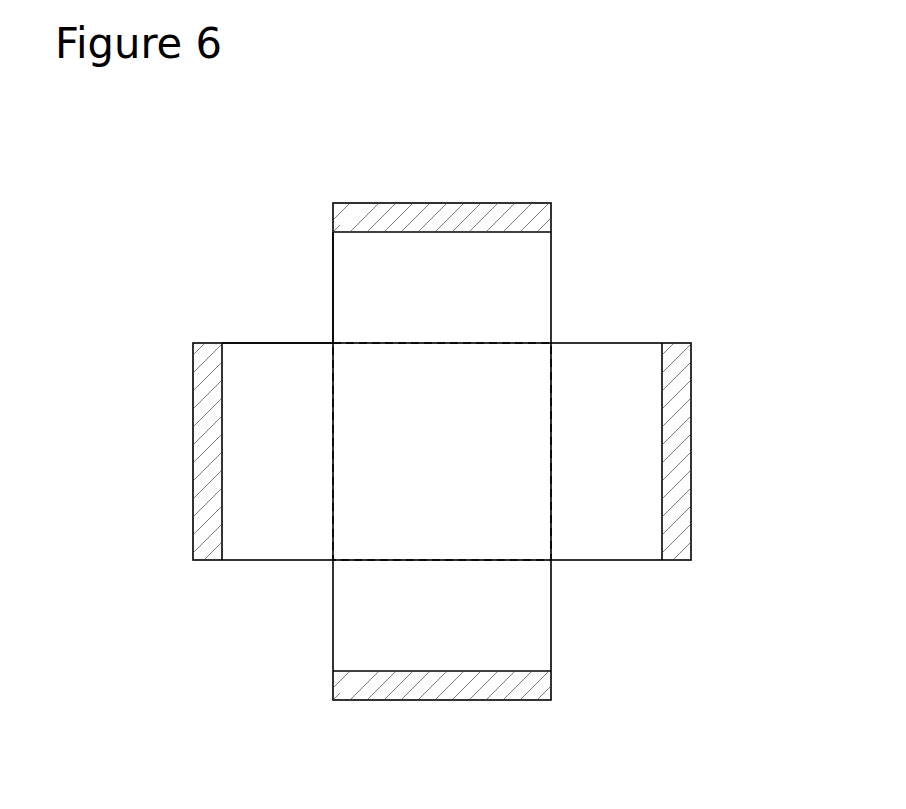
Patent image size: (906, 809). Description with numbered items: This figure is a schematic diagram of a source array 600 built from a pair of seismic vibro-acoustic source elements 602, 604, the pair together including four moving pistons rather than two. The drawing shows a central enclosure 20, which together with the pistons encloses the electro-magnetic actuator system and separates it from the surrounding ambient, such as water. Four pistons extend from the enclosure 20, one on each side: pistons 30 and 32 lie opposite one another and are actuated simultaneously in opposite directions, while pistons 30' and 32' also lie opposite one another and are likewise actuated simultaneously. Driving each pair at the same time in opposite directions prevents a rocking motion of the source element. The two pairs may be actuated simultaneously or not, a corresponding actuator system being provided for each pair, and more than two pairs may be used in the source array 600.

The source array 600 is at (472, 111).
The enclosure 20 is at (606, 343).
The piston 30 is at (231, 451).
The piston 30' is at (457, 238).
The piston 32 is at (662, 451).
The piston 32' is at (444, 662).
The seismic vibro-acoustic source element 602 is at (324, 270).
The seismic vibro-acoustic source element 604 is at (250, 338).